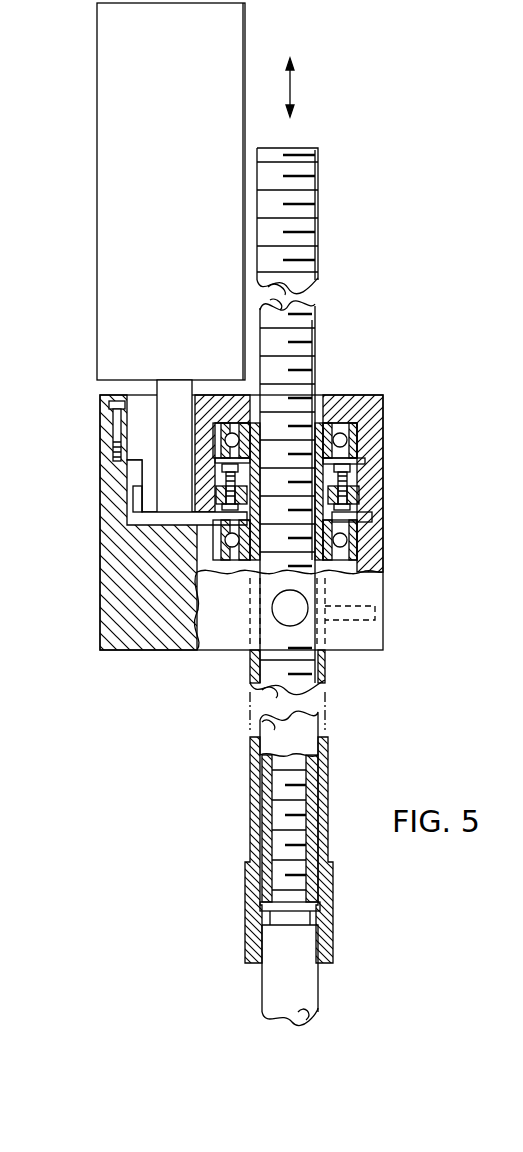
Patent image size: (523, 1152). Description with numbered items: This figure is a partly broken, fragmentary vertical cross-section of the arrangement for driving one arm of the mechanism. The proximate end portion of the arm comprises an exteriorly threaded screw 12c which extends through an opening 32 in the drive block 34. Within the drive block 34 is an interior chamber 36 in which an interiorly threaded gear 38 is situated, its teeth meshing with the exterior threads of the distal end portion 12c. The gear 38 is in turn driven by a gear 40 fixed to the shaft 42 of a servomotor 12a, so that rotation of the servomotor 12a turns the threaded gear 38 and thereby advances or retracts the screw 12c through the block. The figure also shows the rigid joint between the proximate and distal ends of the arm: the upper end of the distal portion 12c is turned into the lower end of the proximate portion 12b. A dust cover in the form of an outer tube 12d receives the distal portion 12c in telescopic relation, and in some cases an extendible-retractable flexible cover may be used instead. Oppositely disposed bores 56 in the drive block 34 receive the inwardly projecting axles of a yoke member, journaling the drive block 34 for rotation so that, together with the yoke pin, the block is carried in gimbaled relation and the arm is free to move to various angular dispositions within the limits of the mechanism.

The servomotor 12a is at (97, 35).
The proximate portion 12b is at (315, 160).
The exteriorly threaded screw 12c is at (318, 986).
The outer tube 12d is at (330, 750).
The opening 32 is at (318, 395).
The drive block 34 is at (108, 591).
The interior chamber 36 is at (362, 461).
The interiorly threaded gear 38 is at (350, 474).
The gear 40 is at (136, 497).
The shaft 42 is at (175, 393).
The bores 56 is at (292, 606).